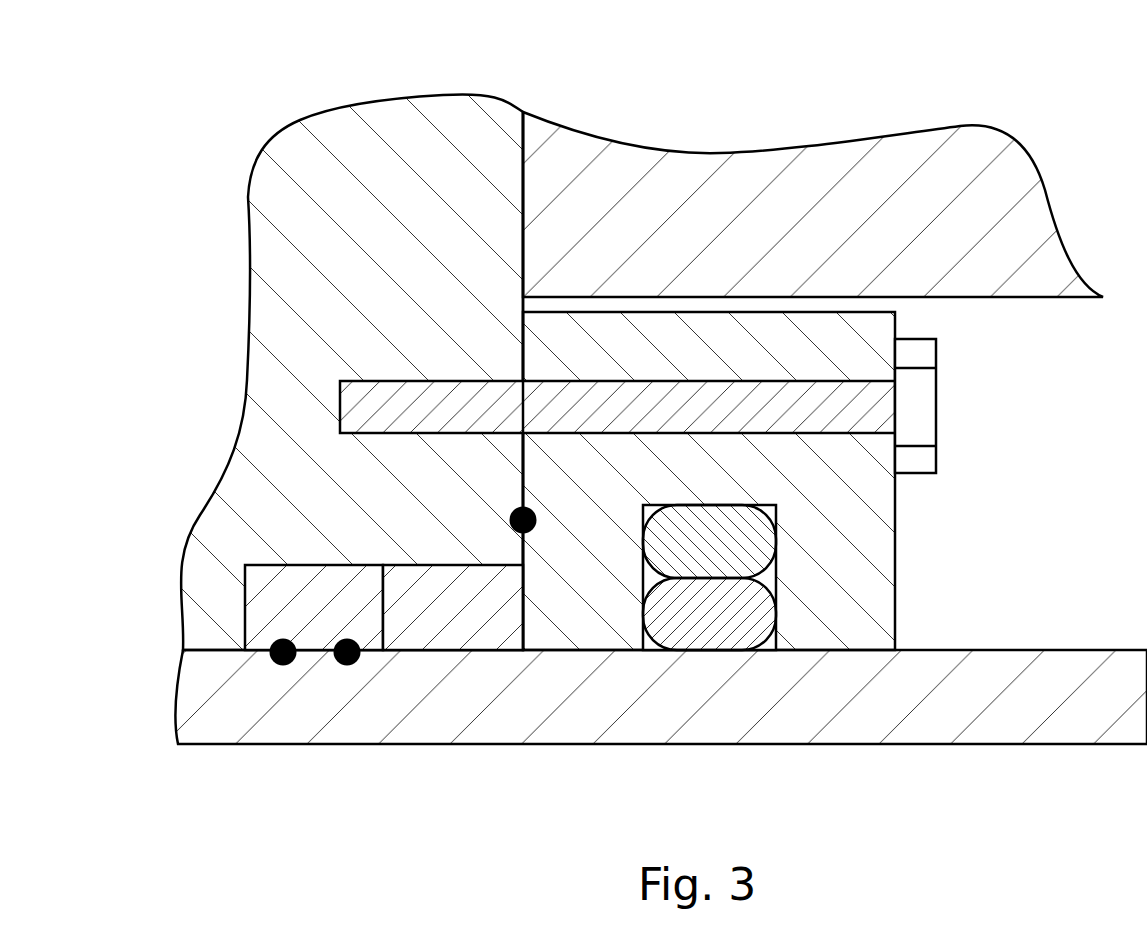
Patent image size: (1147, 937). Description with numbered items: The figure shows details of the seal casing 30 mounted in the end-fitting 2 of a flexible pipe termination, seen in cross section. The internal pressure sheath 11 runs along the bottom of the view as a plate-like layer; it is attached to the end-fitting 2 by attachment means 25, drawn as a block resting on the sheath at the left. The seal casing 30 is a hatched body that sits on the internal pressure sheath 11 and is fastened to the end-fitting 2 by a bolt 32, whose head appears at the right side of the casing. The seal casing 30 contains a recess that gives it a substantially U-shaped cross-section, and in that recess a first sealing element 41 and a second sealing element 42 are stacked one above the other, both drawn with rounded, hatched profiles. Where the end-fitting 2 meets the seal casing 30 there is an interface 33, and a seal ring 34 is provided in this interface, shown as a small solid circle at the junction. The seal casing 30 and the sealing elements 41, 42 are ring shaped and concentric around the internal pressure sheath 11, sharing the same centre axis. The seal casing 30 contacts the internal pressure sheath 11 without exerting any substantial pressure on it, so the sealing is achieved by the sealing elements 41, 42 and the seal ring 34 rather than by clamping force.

The end-fitting 2 is at (606, 122).
The internal pressure sheath 11 is at (1110, 745).
The attachment means 25 is at (440, 653).
The seal casing 30 is at (900, 558).
The bolt 32 is at (940, 395).
The interface 33 is at (523, 597).
The seal ring 34 is at (517, 520).
The first sealing element 41 is at (698, 615).
The second sealing element 42 is at (762, 548).